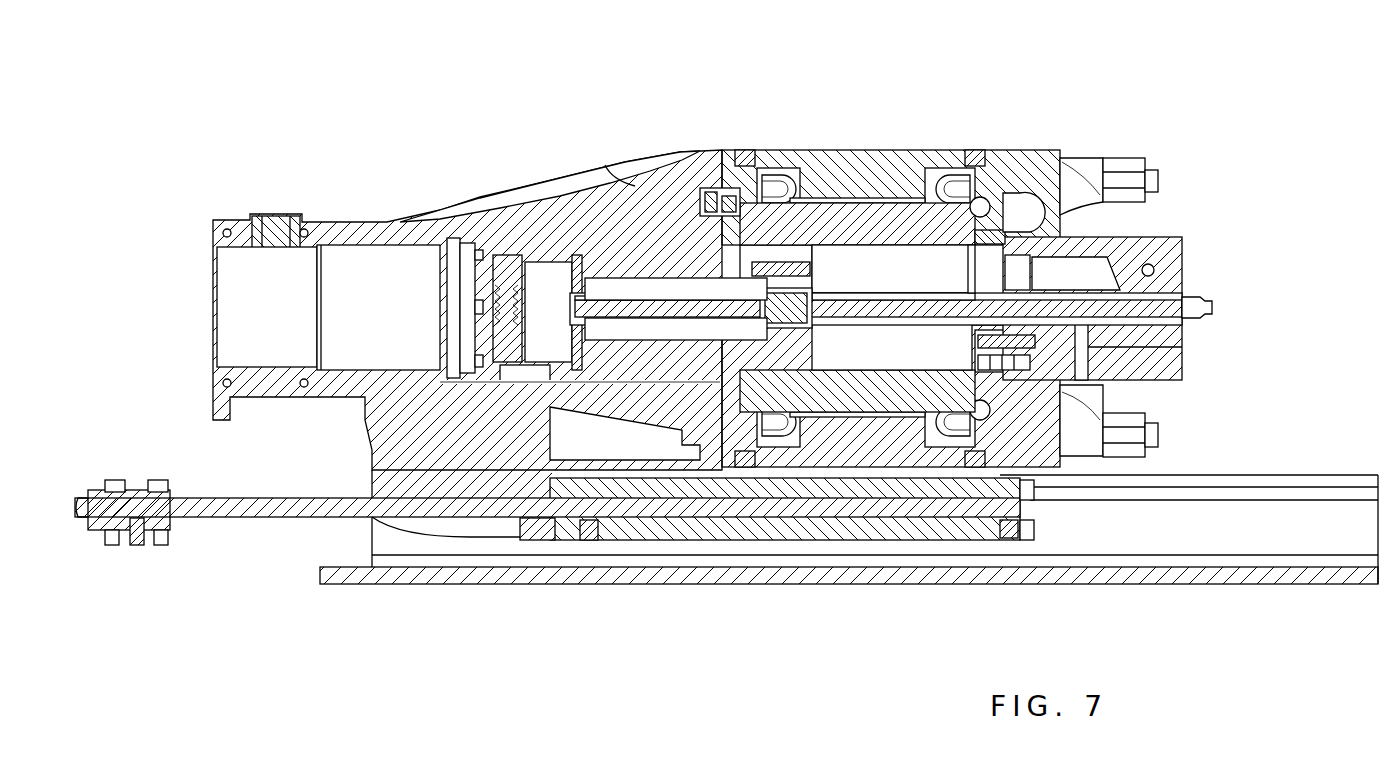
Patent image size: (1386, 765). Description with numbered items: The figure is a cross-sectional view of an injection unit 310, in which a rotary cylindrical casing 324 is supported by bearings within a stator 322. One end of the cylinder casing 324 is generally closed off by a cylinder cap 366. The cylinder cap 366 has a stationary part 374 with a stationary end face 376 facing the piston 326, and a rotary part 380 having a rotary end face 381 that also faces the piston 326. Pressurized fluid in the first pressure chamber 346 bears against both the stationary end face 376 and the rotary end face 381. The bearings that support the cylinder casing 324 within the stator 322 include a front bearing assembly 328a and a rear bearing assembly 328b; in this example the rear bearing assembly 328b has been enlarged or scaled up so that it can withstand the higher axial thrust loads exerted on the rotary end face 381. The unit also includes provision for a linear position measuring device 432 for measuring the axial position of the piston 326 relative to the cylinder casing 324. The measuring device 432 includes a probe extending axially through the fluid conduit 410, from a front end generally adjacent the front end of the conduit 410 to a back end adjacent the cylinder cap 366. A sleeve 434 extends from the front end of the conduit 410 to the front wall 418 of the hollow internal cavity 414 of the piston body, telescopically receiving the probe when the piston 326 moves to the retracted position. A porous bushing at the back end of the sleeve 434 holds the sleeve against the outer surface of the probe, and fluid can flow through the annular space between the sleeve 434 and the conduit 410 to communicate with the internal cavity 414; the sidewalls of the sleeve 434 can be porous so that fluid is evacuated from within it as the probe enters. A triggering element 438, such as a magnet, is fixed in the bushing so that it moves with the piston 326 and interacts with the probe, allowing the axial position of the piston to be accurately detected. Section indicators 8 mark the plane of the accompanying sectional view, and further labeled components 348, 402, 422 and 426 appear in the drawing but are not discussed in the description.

The injection unit 310 is at (1098, 82).
The stator 322 is at (820, 150).
The rotary cylindrical casing 324 is at (858, 375).
The piston 326 is at (818, 267).
The front bearing assembly 328a is at (720, 195).
The rear bearing assembly 328b is at (976, 150).
The first pressure chamber 346 is at (878, 250).
The motor housing 348 is at (600, 252).
The cylinder cap 366 is at (1012, 210).
The stationary part 374 is at (970, 283).
The stationary end face 376 is at (975, 353).
The rotary part 380 is at (970, 246).
The rotary end face 381 is at (972, 367).
The end block 402 is at (1003, 272).
The fluid conduit 410 is at (815, 299).
The hollow internal cavity 414 is at (676, 329).
The front wall 418 is at (592, 293).
The pocket 422 is at (1080, 280).
The passage 426 is at (1082, 347).
The linear position measuring device 432 is at (879, 323).
The sleeve 434 is at (680, 300).
The triggering element 438 is at (760, 310).
The section line indicator 8 is at (713, 366).